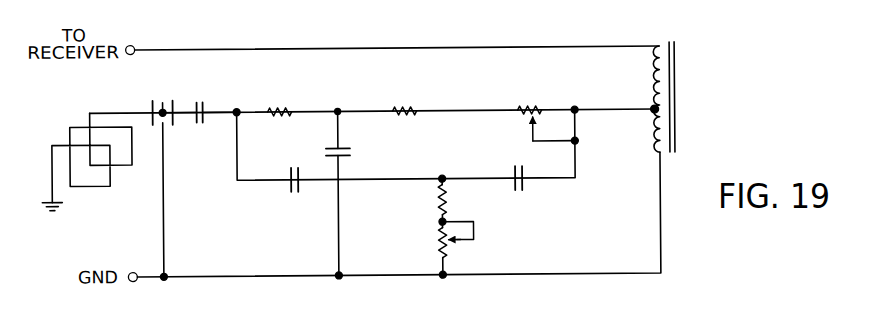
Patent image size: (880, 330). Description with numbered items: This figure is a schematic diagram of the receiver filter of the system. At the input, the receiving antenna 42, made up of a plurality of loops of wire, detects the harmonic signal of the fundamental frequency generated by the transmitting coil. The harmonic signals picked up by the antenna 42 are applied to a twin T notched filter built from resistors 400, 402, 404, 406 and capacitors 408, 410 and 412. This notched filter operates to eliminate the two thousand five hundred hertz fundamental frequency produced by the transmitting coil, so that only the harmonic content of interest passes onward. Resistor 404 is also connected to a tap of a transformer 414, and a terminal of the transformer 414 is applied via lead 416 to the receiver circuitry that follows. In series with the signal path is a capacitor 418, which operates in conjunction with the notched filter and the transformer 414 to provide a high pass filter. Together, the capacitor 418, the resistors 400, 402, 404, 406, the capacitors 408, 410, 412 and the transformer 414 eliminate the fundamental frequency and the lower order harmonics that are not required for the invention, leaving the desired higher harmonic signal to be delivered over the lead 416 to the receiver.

The receiving antenna 42 is at (60, 138).
The resistor 400 is at (278, 105).
The resistor 402 is at (408, 106).
The resistor 404 is at (530, 106).
The resistor 406 is at (438, 213).
The capacitor 408 is at (289, 188).
The capacitor 410 is at (352, 140).
The capacitor 412 is at (514, 168).
The transformer 414 is at (668, 104).
The lead 416 is at (443, 47).
The capacitor 418 is at (195, 104).